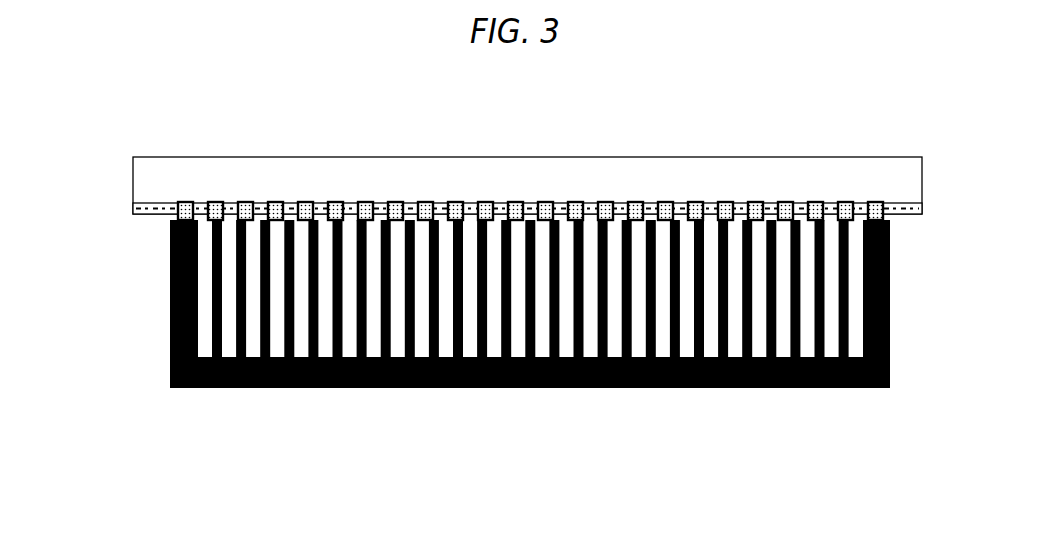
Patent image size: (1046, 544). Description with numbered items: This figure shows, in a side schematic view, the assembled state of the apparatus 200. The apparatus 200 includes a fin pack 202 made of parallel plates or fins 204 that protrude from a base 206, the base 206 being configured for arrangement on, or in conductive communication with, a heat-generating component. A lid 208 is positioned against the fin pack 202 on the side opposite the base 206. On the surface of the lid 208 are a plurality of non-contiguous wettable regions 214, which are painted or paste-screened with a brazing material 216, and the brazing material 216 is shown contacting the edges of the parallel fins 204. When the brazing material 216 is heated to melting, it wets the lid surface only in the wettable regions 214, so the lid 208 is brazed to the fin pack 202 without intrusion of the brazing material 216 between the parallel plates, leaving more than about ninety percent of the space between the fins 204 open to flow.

The apparatus 200 is at (503, 235).
The fin pack 202 is at (503, 321).
The fins 204 is at (850, 260).
The base 206 is at (331, 388).
The lid 208 is at (511, 147).
The wettable regions 214 is at (439, 194).
The brazing material 216 is at (692, 203).